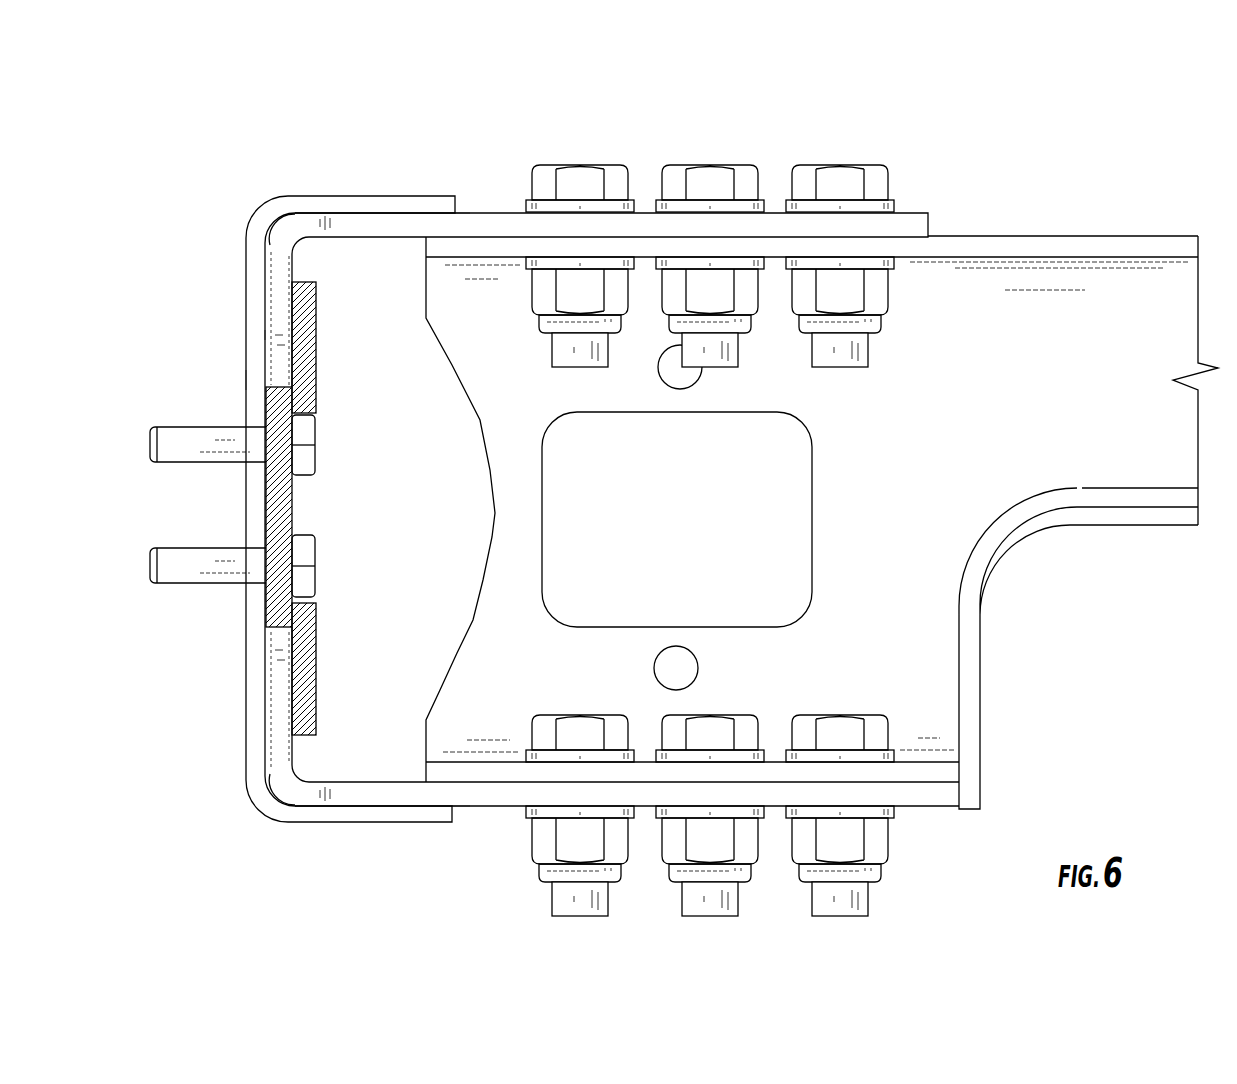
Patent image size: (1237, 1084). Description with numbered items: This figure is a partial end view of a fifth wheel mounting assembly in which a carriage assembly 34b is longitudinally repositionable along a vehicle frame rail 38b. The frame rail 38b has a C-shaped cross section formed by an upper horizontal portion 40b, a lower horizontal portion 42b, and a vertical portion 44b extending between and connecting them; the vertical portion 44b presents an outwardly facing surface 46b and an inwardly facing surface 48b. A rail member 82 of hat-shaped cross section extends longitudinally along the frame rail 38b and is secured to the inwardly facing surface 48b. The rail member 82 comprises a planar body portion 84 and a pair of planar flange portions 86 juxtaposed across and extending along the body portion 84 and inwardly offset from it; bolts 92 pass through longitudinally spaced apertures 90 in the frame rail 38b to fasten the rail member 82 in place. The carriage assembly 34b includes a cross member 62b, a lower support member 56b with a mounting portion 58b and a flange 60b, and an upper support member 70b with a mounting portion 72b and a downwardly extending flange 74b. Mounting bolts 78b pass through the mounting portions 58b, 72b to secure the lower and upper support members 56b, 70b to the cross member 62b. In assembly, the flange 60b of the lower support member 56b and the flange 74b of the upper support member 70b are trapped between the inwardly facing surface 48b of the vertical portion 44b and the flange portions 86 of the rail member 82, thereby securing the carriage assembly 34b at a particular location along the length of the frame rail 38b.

The carriage assembly 34b is at (822, 480).
The vehicle frame rail 38b is at (298, 496).
The upper horizontal portion 40b is at (371, 154).
The lower horizontal portion 42b is at (370, 851).
The vertical portion 44b is at (211, 509).
The outwardly facing surface 46b is at (204, 380).
The inwardly facing surface 48b is at (329, 312).
The lower support member 56b is at (483, 860).
The mounting portion 58b is at (614, 764).
The flange 60b is at (228, 700).
The cross member 62b is at (731, 470).
The upper support member 70b is at (481, 151).
The mounting portion 72b is at (598, 246).
The flange 74b is at (223, 318).
The mounting bolt 78b is at (792, 502).
The rail member 82 is at (341, 508).
The body portion 84 is at (314, 507).
The flange portion 86 is at (335, 508).
The aperture 90 is at (208, 527).
The bolt 92 is at (344, 506).